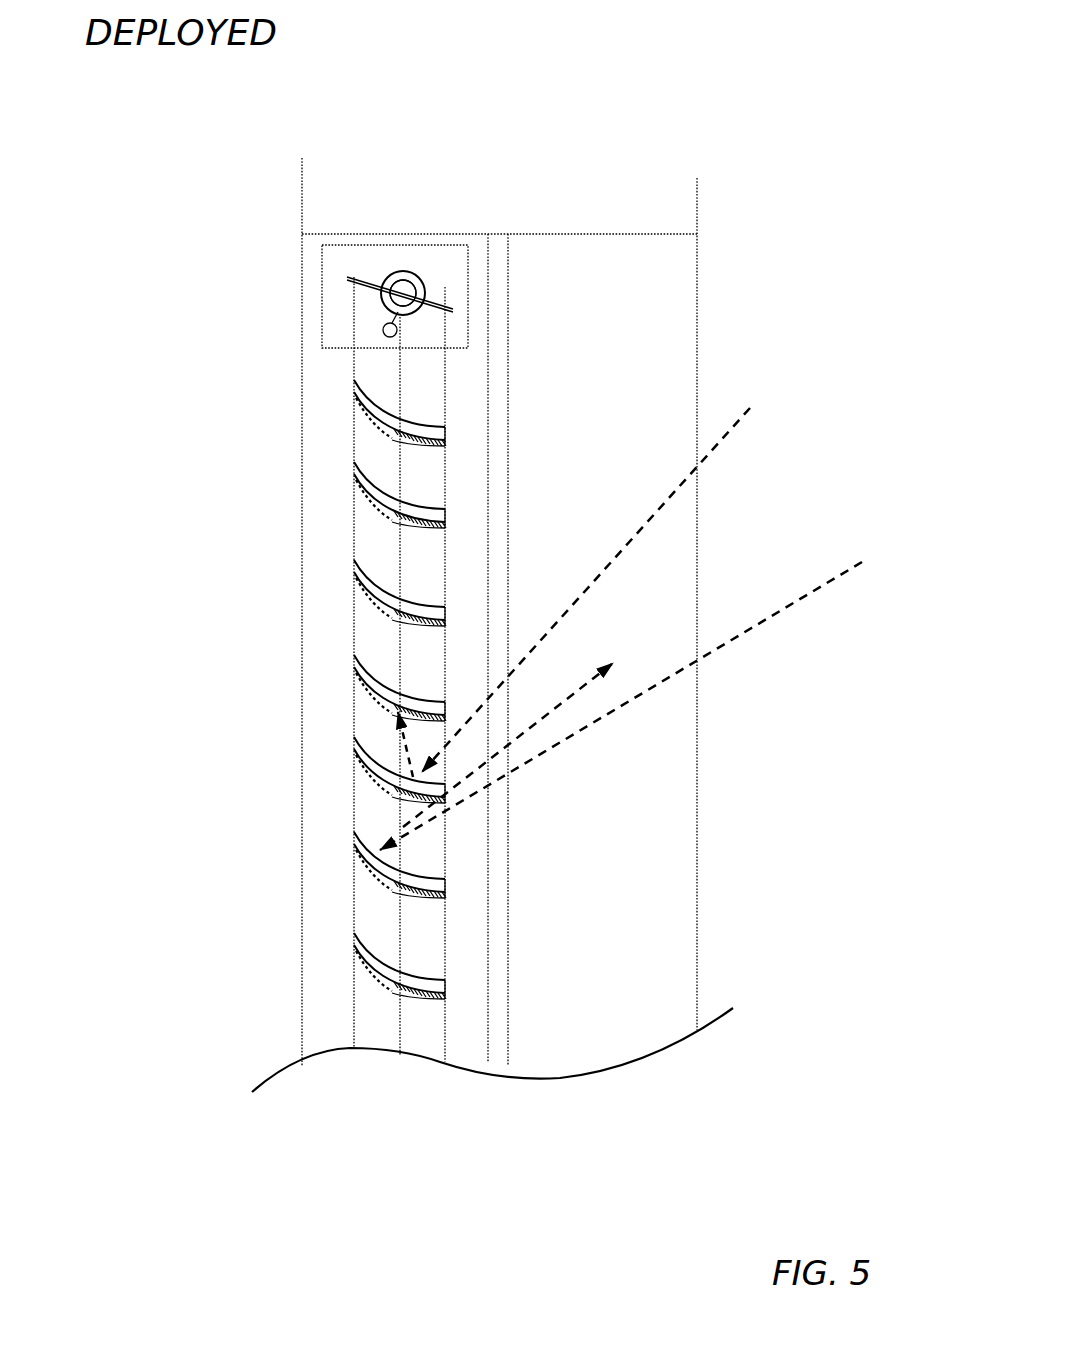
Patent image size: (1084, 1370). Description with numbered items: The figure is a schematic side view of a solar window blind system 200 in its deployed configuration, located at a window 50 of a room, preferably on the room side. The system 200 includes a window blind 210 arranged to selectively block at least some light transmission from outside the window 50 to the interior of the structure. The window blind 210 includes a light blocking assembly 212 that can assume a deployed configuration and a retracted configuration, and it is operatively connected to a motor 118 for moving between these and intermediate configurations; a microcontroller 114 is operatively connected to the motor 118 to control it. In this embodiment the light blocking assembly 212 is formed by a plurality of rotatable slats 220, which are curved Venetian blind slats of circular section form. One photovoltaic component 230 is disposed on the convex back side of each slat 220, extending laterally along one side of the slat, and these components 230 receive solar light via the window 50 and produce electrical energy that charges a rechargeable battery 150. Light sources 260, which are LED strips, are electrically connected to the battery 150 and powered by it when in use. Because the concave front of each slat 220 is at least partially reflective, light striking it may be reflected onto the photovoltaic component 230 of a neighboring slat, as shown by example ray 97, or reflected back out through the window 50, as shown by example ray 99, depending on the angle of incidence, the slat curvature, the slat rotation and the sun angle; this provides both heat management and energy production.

The solar window blind system 200 is at (773, 120).
The window 50 is at (513, 490).
The light blocking assembly 212 is at (292, 348).
The window blind 210 is at (325, 248).
The rechargeable battery 150 is at (428, 258).
The microcontroller 114 is at (393, 258).
The motor 118 is at (403, 293).
The rotatable slats 220 is at (335, 563).
The photovoltaic components 230 is at (447, 527).
The light sources 260 is at (358, 780).
The example ray 97 is at (730, 427).
The example ray 99 is at (828, 578).